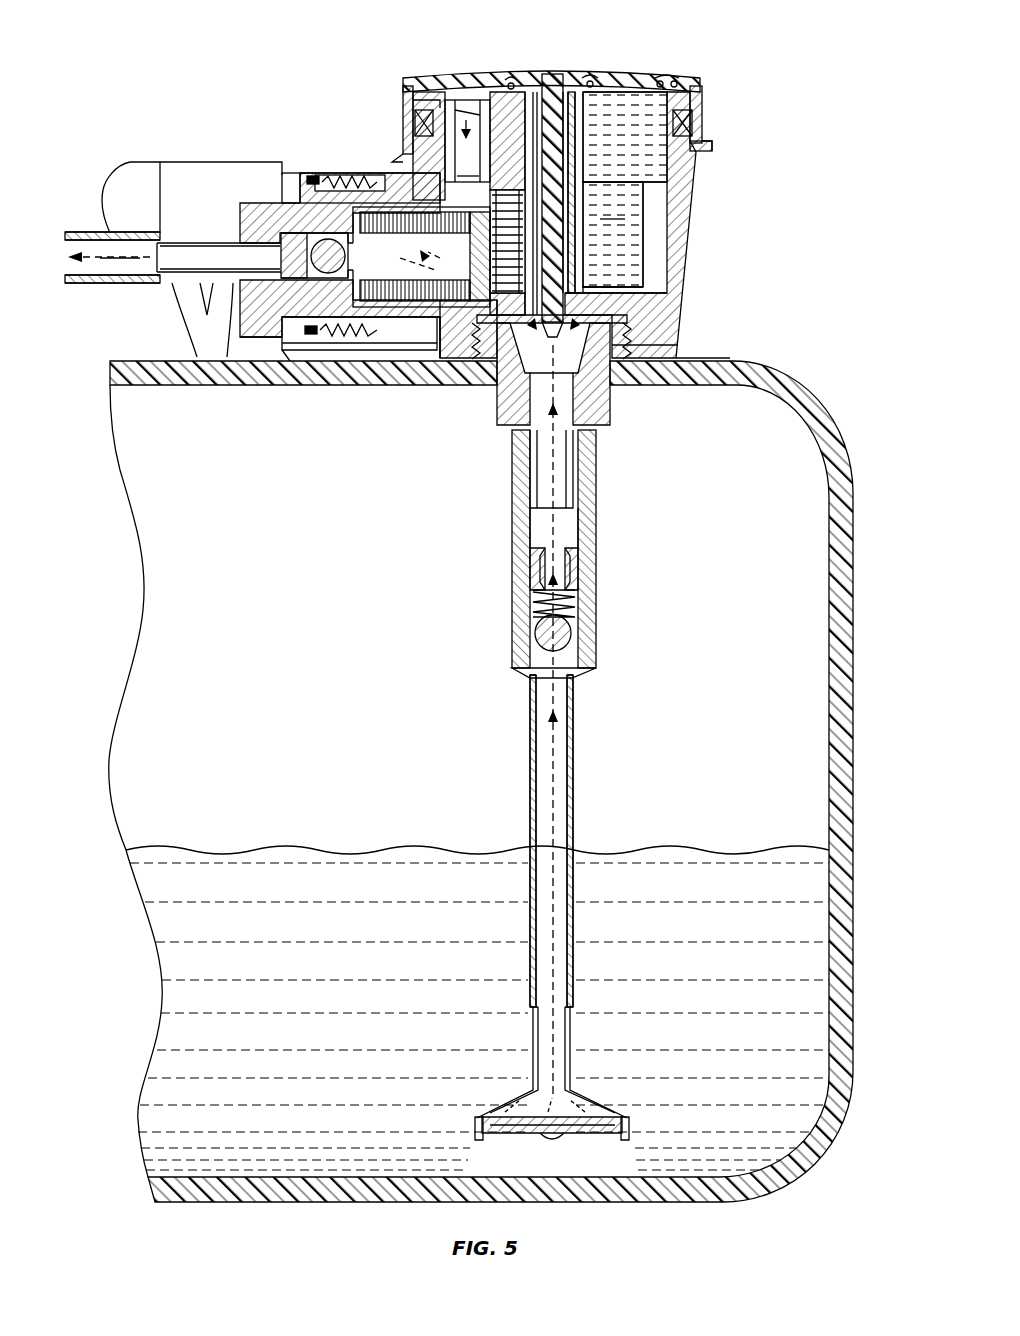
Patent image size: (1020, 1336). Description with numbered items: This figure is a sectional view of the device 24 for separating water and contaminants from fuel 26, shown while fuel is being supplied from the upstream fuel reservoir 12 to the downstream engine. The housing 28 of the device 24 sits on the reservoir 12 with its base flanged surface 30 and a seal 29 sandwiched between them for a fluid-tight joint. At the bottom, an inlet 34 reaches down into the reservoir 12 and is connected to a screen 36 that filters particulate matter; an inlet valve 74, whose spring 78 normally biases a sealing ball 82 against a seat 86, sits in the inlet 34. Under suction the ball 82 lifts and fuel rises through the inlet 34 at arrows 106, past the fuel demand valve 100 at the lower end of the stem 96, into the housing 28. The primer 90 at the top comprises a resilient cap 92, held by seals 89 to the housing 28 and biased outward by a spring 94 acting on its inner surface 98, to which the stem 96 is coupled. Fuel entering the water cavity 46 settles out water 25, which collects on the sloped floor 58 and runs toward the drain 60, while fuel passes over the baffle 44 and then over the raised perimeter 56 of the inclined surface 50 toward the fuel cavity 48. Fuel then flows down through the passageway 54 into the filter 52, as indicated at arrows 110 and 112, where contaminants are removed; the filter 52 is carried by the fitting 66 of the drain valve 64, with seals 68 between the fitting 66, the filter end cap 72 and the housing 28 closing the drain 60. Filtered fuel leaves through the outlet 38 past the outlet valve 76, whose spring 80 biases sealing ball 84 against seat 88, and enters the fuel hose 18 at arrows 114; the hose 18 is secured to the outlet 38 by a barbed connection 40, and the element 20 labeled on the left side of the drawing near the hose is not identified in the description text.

The fuel reservoir 12 is at (853, 540).
The fuel hose 18 is at (82, 232).
The housing 20 is at (131, 165).
The device 24 is at (743, 78).
The water 25 is at (646, 240).
The fuel 26 is at (798, 927).
The housing 28 is at (698, 188).
The seal 29 is at (730, 360).
The base flanged surface 30 is at (680, 352).
The inlet 34 is at (650, 633).
The screen 36 is at (596, 1110).
The outlet 38 is at (88, 320).
The barbed connection 40 is at (160, 232).
The baffle 44 is at (553, 92).
The water cavity 46 is at (518, 92).
The fuel cavity 48 is at (436, 198).
The inclined surface 50 is at (478, 105).
The filter 52 is at (438, 322).
The passageway 54 is at (467, 141).
The raised perimeter 56 is at (506, 92).
The sloped floor 58 is at (648, 276).
The drain 60 is at (363, 345).
The valve 64 is at (290, 345).
The fitting 66 is at (345, 265).
The seals 68 is at (398, 190).
The end cap 72 is at (468, 330).
The inlet valve 74 is at (598, 620).
The outlet valve 76 is at (258, 222).
The spring 78 is at (545, 605).
The spring 80 is at (268, 250).
The sealing ball 82 is at (538, 668).
The sealing ball 84 is at (327, 272).
The seat 86 is at (565, 652).
The seat 88 is at (305, 180).
The seals 89 is at (422, 108).
The primer 90 is at (610, 68).
The cap 92 is at (643, 80).
The spring 94 is at (714, 148).
The stem 96 is at (598, 306).
The inner surface 98 is at (700, 138).
The fuel demand valve 100 is at (583, 378).
The arrows 106 is at (565, 560).
The arrows 110 is at (395, 135).
The arrows 112 is at (421, 257).
The arrows 114 is at (73, 280).